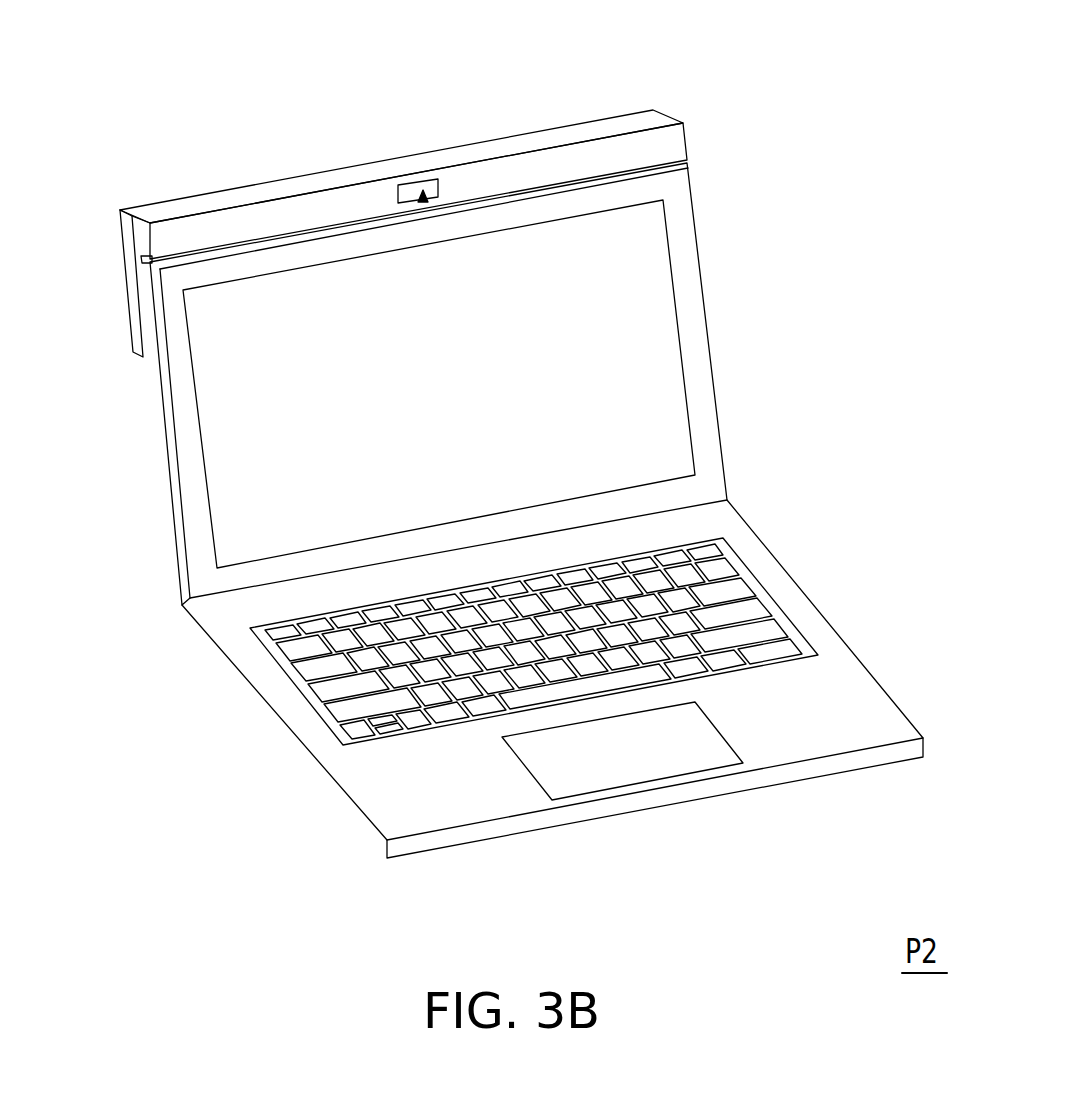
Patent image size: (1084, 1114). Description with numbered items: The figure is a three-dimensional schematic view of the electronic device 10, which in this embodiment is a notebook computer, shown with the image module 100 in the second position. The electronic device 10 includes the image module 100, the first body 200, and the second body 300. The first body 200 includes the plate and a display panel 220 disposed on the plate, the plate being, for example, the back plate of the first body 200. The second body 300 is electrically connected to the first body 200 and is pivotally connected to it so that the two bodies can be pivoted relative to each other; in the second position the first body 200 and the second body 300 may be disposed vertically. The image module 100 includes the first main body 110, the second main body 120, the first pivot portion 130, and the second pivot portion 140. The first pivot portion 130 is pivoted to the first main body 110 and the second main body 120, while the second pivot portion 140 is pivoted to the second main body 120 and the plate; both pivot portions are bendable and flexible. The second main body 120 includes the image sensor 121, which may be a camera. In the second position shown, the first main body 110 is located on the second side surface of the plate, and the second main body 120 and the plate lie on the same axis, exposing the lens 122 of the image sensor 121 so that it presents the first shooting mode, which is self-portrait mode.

The electronic device 10 is at (782, 827).
The image module 100 is at (632, 95).
The first main body 110 is at (137, 315).
The second main body 120 is at (663, 147).
The image sensor 121 is at (408, 192).
The lens 122 is at (423, 200).
The first pivot portion 130 is at (134, 211).
The second pivot portion 140 is at (146, 260).
The first body 200 is at (508, 384).
The display panel 220 is at (688, 290).
The second body 300 is at (847, 692).